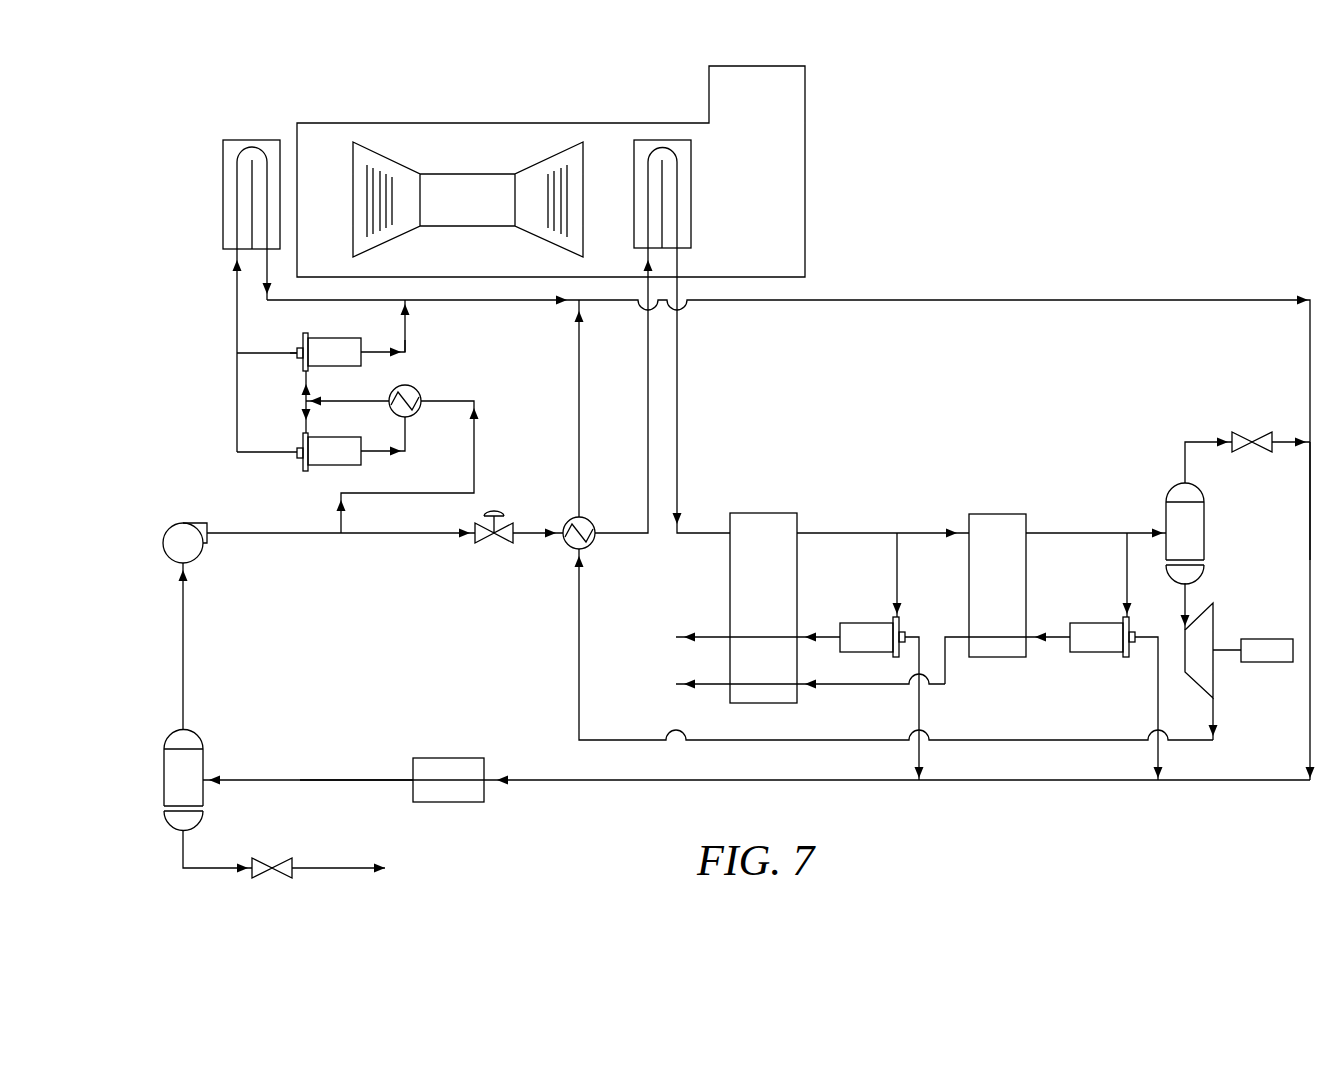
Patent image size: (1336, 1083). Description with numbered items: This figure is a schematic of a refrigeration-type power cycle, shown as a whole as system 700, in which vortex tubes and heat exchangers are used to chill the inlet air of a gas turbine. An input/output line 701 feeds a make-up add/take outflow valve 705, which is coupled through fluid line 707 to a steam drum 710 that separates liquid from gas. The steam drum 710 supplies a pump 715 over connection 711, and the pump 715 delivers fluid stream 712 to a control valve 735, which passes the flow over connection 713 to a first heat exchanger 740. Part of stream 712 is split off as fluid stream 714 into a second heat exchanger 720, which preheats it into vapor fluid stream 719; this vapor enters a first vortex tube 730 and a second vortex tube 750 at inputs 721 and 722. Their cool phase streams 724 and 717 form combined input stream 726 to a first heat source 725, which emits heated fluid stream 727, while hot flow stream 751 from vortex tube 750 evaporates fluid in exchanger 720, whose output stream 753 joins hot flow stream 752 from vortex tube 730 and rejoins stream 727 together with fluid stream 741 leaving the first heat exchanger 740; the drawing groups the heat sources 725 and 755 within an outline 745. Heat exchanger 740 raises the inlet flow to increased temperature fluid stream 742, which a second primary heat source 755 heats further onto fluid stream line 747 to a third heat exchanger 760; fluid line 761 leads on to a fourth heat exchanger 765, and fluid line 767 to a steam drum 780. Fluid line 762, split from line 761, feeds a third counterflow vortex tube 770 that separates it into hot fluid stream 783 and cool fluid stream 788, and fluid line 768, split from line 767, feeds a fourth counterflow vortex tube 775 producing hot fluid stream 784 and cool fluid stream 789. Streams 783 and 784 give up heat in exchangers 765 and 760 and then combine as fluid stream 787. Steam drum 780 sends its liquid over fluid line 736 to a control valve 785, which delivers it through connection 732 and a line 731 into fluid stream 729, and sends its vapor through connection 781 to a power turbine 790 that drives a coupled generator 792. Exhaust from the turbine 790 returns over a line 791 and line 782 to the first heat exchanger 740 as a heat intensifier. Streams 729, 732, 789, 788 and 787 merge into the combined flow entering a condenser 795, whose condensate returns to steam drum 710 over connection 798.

The power generation system 700 is at (1018, 198).
The input/output line 701 is at (325, 868).
The make-up add/take outflow valve 705 is at (256, 858).
The fluid line 707 is at (183, 848).
The steam drum 710 is at (203, 757).
The connection 711 is at (183, 645).
The connection 712 is at (260, 534).
The connection 713 is at (533, 533).
The fluid stream 714 is at (467, 453).
The pump 715 is at (178, 525).
The cool phase stream 717 is at (237, 403).
The vapor fluid stream 719 is at (337, 400).
The second heat exchanger 720 is at (422, 382).
The input 721 is at (303, 395).
The input 722 is at (303, 408).
The cool phase stream 724 is at (267, 351).
The first heat source 725 is at (253, 140).
The combined input stream 726 is at (237, 338).
The heated fluid stream 727 is at (437, 300).
The fluid stream 729 is at (993, 300).
The first vortex tube 730 is at (333, 338).
The line 731 is at (1310, 500).
The connection 732 is at (1285, 440).
The control valve 735 is at (497, 545).
The fluid line 736 is at (1203, 442).
The first heat exchanger 740 is at (590, 545).
The fluid stream 741 is at (579, 442).
The increased temperature fluid stream 742 is at (648, 420).
The combustion chamber 745 is at (808, 240).
The fluid stream line 747 is at (679, 430).
The second vortex tube 750 is at (337, 470).
The hot flow stream 751 is at (380, 443).
The hot flow stream 752 is at (373, 345).
The output stream 753 is at (407, 342).
The second primary heat source 755 is at (692, 195).
The third heat exchanger 760 is at (760, 513).
The fluid line 761 is at (835, 533).
The fluid line 762 is at (897, 575).
The fourth heat exchanger 765 is at (1000, 514).
The fluid line 767 is at (1064, 533).
The fluid line 768 is at (1127, 575).
The third counterflow vortex tube 770 is at (868, 623).
The fourth counterflow vortex tube 775 is at (1097, 623).
The steam drum 780 is at (1204, 533).
The connection 781 is at (1185, 600).
The line 782 is at (579, 650).
The hot fluid stream 783 is at (705, 637).
The hot fluid stream 784 is at (945, 665).
The control valve 785 is at (1248, 432).
The fluid stream 787 is at (674, 684).
The cool fluid stream 788 is at (920, 702).
The cool fluid stream 789 is at (1158, 682).
The power turbine 790 is at (1213, 633).
The line 791 is at (1227, 652).
The generator 792 is at (1257, 662).
The condenser 795 is at (448, 802).
The fluid flow stream connection 798 is at (327, 780).